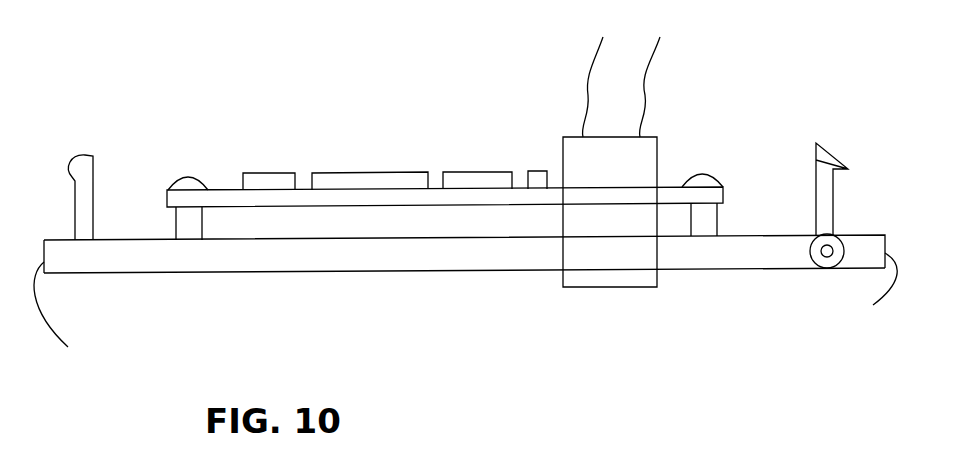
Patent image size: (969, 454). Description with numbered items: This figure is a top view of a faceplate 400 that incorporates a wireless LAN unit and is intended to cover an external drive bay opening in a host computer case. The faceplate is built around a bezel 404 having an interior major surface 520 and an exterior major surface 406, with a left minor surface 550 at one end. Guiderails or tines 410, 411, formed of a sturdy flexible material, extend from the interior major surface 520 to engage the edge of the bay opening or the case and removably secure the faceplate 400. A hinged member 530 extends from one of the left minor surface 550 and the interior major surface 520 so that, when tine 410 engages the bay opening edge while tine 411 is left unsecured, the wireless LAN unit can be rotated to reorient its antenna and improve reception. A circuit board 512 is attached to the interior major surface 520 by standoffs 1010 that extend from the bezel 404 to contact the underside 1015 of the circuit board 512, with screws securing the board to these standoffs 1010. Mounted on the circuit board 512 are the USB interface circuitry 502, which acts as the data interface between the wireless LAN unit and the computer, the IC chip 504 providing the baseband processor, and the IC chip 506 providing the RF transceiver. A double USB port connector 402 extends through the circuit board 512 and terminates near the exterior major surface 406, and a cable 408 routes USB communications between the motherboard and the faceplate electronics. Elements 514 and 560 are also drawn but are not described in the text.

The faceplate 400 is at (803, 102).
The double USB port connector 402 is at (647, 158).
The bezel 404 is at (313, 255).
The exterior major surface 406 is at (397, 272).
The cable 408 is at (620, 70).
The tine 410 is at (827, 155).
The tine 411 is at (82, 162).
The USB interface circuitry 502 is at (492, 177).
The IC chip 504 is at (365, 180).
The IC chip 506 is at (270, 178).
The circuit board 512 is at (236, 198).
The solder bump 514 is at (185, 180).
The interior major surface 520 is at (412, 238).
The hinged member 530 is at (828, 235).
The left minor surface 550 is at (871, 293).
The cable 560 is at (72, 317).
The standoffs 1010 is at (184, 225).
The underside 1015 is at (488, 206).